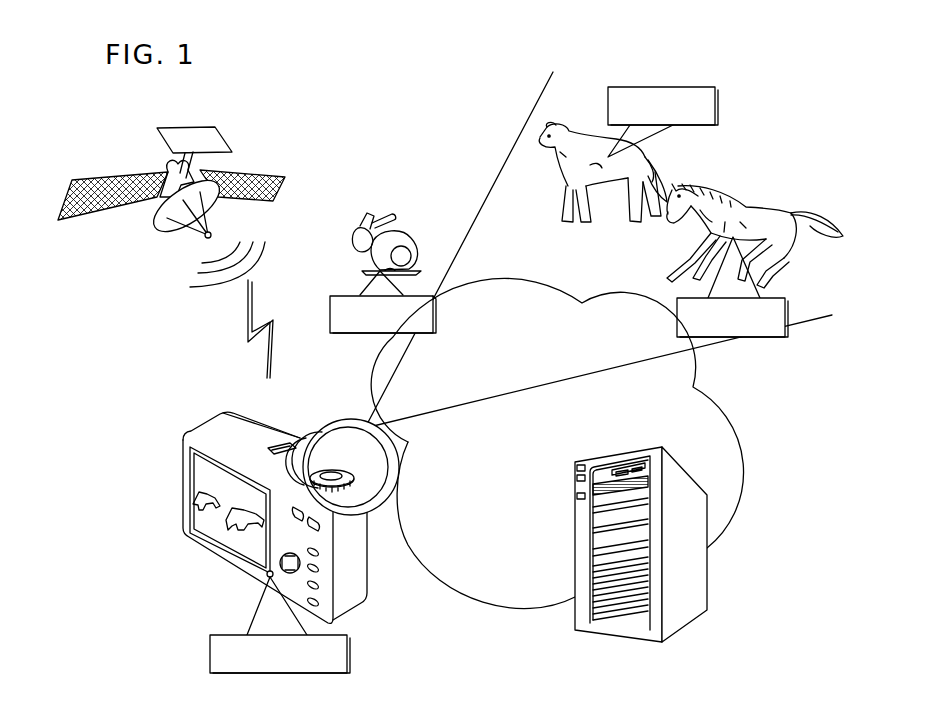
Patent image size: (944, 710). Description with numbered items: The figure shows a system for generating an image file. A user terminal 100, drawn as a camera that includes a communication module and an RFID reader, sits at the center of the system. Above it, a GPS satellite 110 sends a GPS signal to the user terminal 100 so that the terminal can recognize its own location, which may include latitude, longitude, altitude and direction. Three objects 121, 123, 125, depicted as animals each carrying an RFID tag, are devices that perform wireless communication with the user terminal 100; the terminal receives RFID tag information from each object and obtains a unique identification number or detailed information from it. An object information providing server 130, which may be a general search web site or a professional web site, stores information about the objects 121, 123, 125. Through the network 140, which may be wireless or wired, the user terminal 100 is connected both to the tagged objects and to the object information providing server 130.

The user terminal 100 is at (190, 533).
The Global Positioning System (GPS) satellite 110 is at (90, 216).
The object 121 is at (364, 212).
The object 123 is at (560, 120).
The object 125 is at (712, 182).
The object information providing server 130 is at (707, 535).
The network 140 is at (468, 585).